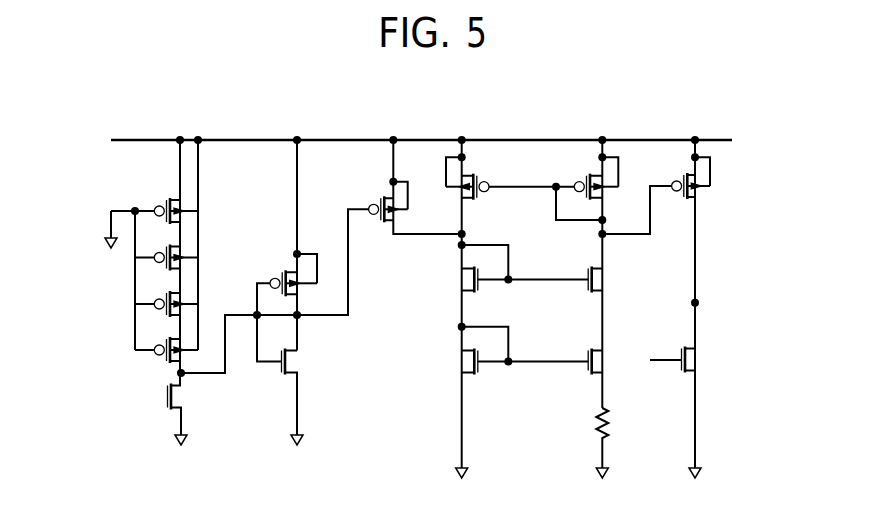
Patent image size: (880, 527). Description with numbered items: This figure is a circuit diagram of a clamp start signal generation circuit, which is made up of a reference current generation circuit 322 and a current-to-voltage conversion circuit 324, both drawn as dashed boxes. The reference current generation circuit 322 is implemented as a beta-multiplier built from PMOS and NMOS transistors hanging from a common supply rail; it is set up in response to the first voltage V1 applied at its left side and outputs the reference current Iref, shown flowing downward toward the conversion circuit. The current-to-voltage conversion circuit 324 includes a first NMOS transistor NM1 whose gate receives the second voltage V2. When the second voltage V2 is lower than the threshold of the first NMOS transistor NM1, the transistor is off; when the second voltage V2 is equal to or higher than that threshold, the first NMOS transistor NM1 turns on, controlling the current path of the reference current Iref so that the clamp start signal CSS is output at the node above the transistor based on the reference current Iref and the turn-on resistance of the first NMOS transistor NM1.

The reference current generation circuit 322 is at (92, 127).
The current-to-voltage conversion circuit 324 is at (759, 390).
The first NMOS transistor NM1 is at (695, 390).
The clamp start signal CSS is at (695, 303).
The reference current Iref is at (708, 227).
The first voltage V1 is at (168, 396).
The second voltage V2 is at (650, 360).